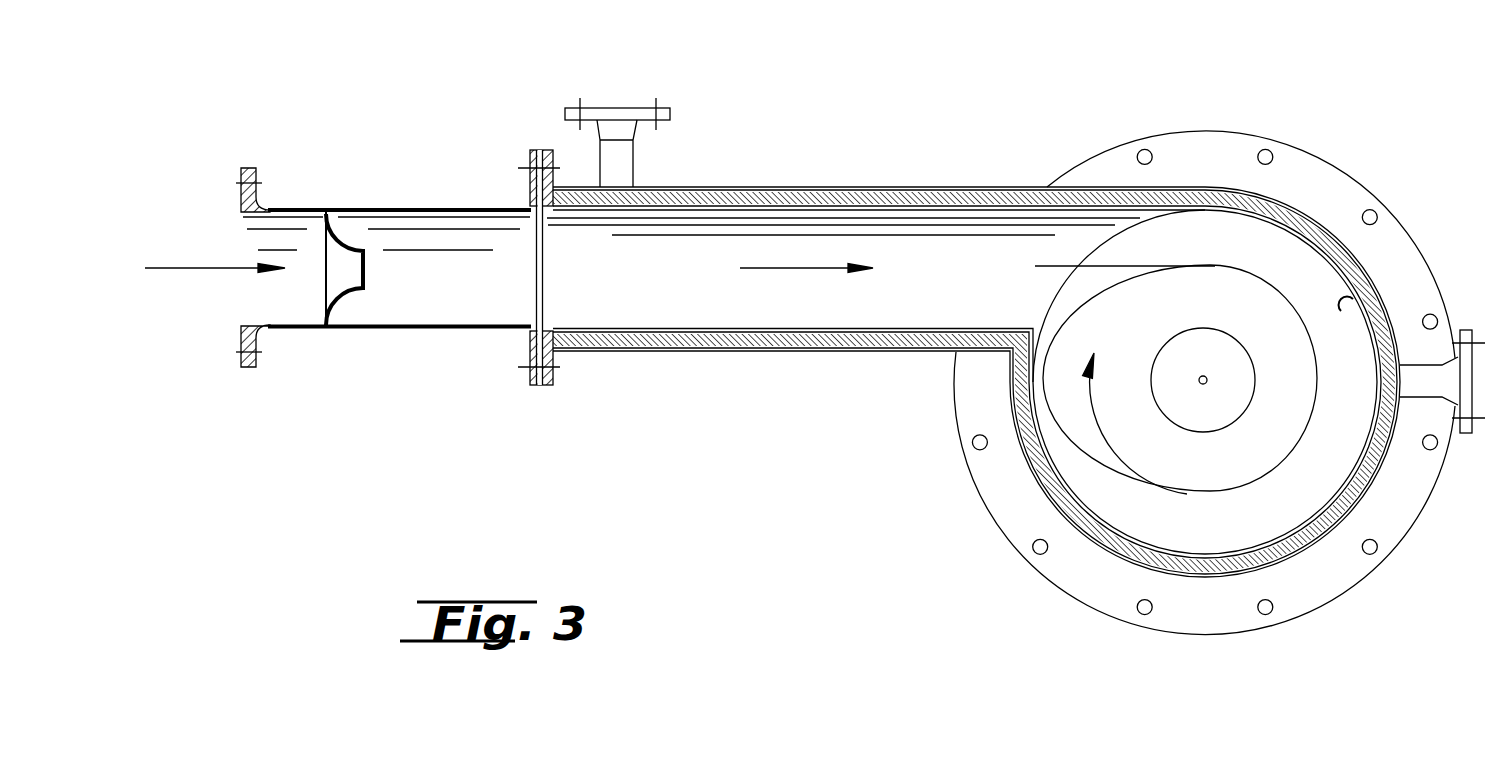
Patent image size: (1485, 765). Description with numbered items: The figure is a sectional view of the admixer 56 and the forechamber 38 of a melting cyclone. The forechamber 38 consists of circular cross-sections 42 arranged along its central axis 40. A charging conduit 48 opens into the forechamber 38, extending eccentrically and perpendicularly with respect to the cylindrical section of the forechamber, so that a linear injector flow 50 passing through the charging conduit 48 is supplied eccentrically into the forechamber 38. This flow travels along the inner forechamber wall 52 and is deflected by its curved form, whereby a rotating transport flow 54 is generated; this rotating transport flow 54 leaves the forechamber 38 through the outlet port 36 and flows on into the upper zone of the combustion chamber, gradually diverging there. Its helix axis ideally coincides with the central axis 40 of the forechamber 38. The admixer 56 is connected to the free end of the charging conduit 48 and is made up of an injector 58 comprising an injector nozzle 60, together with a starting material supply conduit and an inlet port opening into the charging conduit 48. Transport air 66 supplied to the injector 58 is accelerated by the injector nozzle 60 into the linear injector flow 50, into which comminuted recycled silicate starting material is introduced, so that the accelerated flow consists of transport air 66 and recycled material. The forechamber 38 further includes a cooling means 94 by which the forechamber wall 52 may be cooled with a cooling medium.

The outlet port 36 is at (1202, 412).
The forechamber 38 is at (1050, 597).
The central axis 40 is at (1207, 378).
The circular cross-sections 42 is at (1273, 243).
The charging conduit 48 is at (710, 312).
The linear injector flow 50 is at (783, 267).
The inner forechamber wall 52 is at (1350, 290).
The rotating transport flow 54 is at (1190, 493).
The admixer 56 is at (376, 165).
The injector 58 is at (285, 320).
The injector nozzle 60 is at (348, 295).
The transport air 66 is at (163, 267).
The cooling means 94 is at (1303, 538).